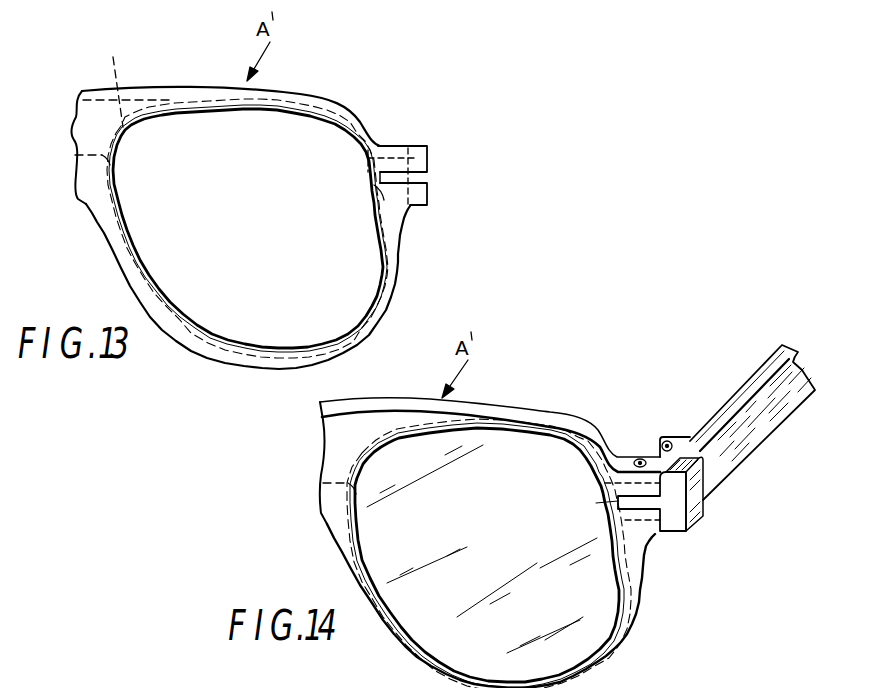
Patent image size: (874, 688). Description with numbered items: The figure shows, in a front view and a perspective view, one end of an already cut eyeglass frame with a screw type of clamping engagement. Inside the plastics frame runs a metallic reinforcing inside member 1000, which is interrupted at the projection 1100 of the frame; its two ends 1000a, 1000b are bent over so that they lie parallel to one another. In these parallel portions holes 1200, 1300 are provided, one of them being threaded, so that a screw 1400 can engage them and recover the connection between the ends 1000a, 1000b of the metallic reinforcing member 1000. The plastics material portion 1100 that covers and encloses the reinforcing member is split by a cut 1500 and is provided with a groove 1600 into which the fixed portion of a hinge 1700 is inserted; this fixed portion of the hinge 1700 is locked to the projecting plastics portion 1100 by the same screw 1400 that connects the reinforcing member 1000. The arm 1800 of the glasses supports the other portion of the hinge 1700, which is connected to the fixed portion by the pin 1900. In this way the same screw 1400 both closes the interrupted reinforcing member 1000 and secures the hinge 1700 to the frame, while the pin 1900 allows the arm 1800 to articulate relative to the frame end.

In FIG. 14, the reinforcing inside member 1000 is at (506, 425).
In FIG. 13, the end of reinforcing member 1000a is at (392, 290).
In FIG. 14, the end of reinforcing member 1000a is at (613, 520).
In FIG. 13, the end of reinforcing member 1000b is at (393, 293).
In FIG. 14, the end of reinforcing member 1000b is at (640, 620).
In FIG. 13, the projection 1100 is at (398, 175).
In FIG. 14, the projection 1100 is at (665, 465).
In FIG. 13, the hole 1200 is at (403, 147).
In FIG. 13, the hole 1300 is at (405, 207).
In FIG. 14, the screw 1400 is at (641, 458).
In FIG. 13, the cut 1500 is at (351, 183).
In FIG. 14, the cut 1500 is at (583, 507).
In FIG. 13, the groove 1600 is at (430, 175).
In FIG. 14, the hinge 1700 is at (721, 547).
In FIG. 14, the arm 1800 is at (793, 400).
In FIG. 14, the pin 1900 is at (669, 442).